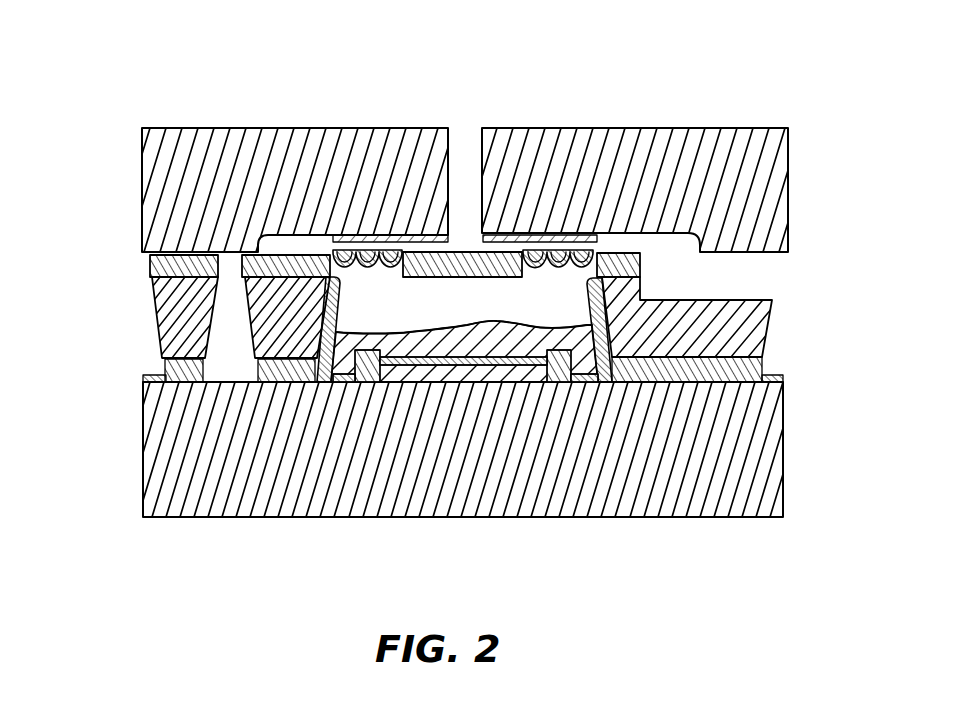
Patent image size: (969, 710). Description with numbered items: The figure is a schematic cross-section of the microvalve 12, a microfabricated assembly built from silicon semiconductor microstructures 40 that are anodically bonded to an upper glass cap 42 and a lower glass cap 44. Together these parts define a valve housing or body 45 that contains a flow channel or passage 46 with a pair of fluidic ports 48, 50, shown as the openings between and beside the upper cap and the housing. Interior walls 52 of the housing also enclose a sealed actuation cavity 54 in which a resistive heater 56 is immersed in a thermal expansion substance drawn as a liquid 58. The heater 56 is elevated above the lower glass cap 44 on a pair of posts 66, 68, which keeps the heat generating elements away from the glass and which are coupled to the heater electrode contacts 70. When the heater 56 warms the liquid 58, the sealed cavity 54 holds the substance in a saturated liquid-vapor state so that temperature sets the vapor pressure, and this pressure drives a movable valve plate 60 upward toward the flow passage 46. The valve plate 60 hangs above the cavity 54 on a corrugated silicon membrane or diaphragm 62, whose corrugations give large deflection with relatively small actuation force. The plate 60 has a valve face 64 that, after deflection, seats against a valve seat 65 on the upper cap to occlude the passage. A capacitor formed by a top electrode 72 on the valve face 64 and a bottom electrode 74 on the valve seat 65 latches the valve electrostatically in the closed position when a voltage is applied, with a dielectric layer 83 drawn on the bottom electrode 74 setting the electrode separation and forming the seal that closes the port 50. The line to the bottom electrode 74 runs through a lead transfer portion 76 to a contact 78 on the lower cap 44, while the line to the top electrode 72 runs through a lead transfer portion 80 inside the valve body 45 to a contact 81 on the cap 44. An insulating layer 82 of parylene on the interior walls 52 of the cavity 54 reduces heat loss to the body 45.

The microvalve 12 is at (147, 51).
The semiconductor microstructures 40 is at (107, 334).
The glass cap 42 is at (142, 183).
The glass cap 44 is at (142, 466).
The valve housing or body 45 is at (558, 456).
The flow channel or passage 46 is at (623, 240).
The fluidic port 48 is at (465, 127).
The fluidic port 50 is at (765, 273).
The interior walls 52 is at (340, 322).
The sealed actuation cavity 54 is at (577, 330).
The resistive heater 56 is at (520, 365).
The liquid 58 is at (472, 216).
The movable valve plate 60 is at (462, 315).
The corrugated silicon membrane or diaphragm 62 is at (347, 250).
The valve face 64 is at (413, 241).
The valve seat 65 is at (508, 240).
The post 66 is at (370, 375).
The post 68 is at (560, 383).
The heater electrode contacts 70 is at (325, 378).
The top electrode 72 is at (568, 250).
The bottom electrode 74 is at (447, 247).
The lead transfer portion 76 is at (165, 366).
The contact 78 is at (147, 380).
The lead transfer portion 80 is at (712, 372).
The contact 81 is at (783, 376).
The insulating layer 82 is at (250, 302).
The dielectric layer 83 is at (470, 158).